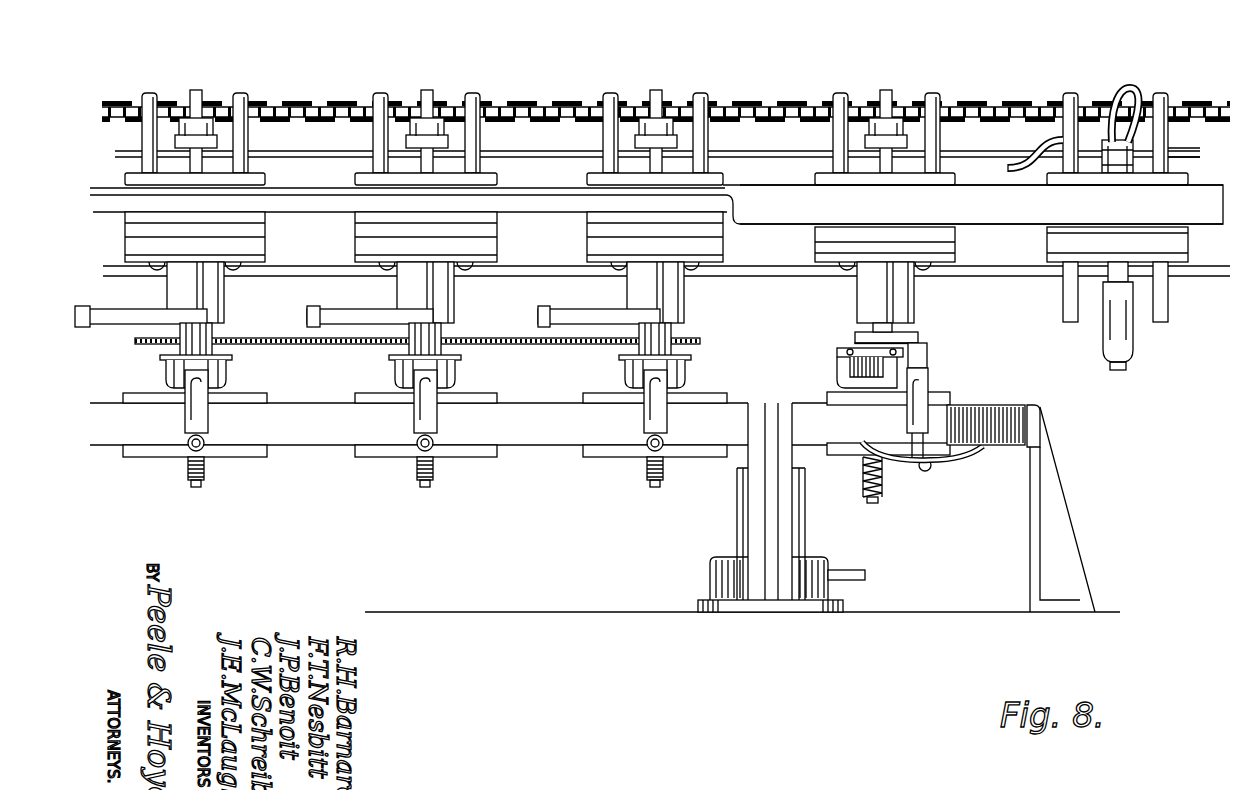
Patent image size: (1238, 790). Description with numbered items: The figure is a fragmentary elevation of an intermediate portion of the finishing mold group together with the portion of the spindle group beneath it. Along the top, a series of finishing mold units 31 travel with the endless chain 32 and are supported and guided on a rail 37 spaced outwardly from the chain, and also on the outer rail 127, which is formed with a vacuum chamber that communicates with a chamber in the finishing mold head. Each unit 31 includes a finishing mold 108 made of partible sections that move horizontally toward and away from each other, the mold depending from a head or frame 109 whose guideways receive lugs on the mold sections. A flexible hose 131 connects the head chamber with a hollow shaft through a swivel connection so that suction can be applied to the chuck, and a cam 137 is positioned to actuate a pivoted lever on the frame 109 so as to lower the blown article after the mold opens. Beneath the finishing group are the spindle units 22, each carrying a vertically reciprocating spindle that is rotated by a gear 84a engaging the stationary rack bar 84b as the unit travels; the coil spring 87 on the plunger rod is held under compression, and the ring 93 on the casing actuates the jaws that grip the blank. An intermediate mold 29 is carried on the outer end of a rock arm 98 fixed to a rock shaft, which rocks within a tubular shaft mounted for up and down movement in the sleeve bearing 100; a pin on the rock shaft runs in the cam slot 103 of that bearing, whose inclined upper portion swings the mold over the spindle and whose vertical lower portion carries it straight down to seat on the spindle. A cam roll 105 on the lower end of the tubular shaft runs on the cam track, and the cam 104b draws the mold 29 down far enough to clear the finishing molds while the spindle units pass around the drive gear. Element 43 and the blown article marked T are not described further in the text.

The spindle unit 22 is at (694, 382).
The intermediate mold 29 is at (305, 309).
The finishing mold unit 31 is at (828, 143).
The endless chain 32 is at (770, 102).
The rail 37 is at (582, 200).
The pedestal bearing 43 is at (820, 557).
The gear 84a is at (215, 337).
The rack bar 84b is at (330, 347).
The coil spring 87 is at (202, 468).
The ring 93 is at (460, 362).
The rock arm 98 is at (918, 336).
The sleeve bearing 100 is at (928, 384).
The cam slot 103 is at (200, 412).
The cam 104b is at (955, 460).
The cam roll 105 is at (436, 440).
The finishing mold 108 is at (685, 303).
The head or frame 109 is at (817, 178).
The outer rail 127 is at (1037, 222).
The flexible hose 131 is at (1136, 82).
The cam 137 is at (1040, 151).
The nozzle T is at (1135, 340).